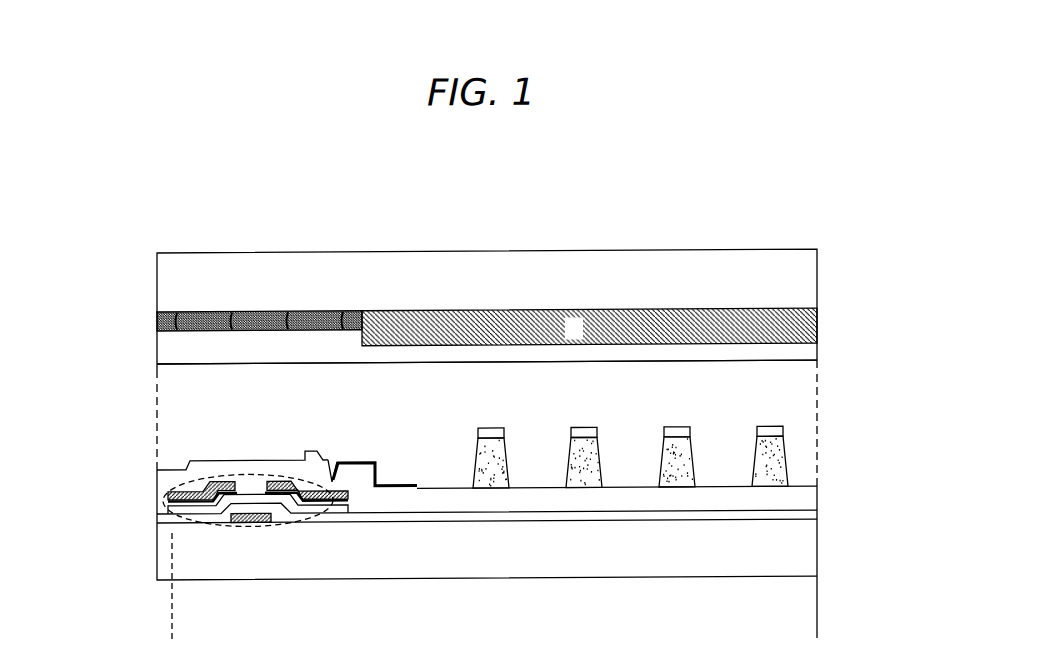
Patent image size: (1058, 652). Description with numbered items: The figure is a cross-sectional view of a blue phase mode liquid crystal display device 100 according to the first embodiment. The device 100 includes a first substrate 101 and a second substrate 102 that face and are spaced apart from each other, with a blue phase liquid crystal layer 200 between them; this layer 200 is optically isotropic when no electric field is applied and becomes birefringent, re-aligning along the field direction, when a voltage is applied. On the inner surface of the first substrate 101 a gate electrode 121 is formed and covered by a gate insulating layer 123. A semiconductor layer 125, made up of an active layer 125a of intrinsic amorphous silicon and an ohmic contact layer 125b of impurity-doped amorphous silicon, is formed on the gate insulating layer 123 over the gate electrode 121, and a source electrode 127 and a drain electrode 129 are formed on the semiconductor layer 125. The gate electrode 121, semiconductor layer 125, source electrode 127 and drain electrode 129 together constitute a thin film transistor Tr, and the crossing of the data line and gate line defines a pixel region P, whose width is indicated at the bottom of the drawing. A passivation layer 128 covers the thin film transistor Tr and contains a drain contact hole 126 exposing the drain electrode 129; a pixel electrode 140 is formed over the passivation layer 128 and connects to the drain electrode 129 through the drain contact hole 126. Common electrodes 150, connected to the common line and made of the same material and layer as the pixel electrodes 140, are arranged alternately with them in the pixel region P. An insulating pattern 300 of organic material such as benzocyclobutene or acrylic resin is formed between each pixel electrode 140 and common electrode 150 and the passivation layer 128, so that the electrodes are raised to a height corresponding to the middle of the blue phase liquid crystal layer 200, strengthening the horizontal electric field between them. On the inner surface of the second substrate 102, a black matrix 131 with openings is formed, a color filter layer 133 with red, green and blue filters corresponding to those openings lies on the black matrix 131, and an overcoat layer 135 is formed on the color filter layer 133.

The blue phase mode liquid crystal display device 100 is at (786, 200).
The first substrate 101 is at (792, 543).
The second substrate 102 is at (792, 285).
The gate electrode 121 is at (236, 526).
The gate insulating layer 123 is at (415, 516).
The semiconductor layer 125 is at (258, 548).
The active layer 125a is at (296, 503).
The ohmic contact layer 125b is at (321, 503).
The drain contact hole 126 is at (334, 452).
The source electrode 127 is at (214, 481).
The passivation layer 128 is at (170, 482).
The drain electrode 129 is at (289, 481).
The black matrix 131 is at (178, 322).
The color filter layer 133 is at (462, 314).
The overcoat layer 135 is at (182, 348).
The pixel electrode 140 is at (366, 462).
The common electrode 150 is at (584, 432).
The blue phase liquid crystal layer 200 is at (792, 408).
The insulating pattern 300 is at (792, 458).
The thin film transistor Tr is at (247, 528).
The pixel region P is at (817, 630).